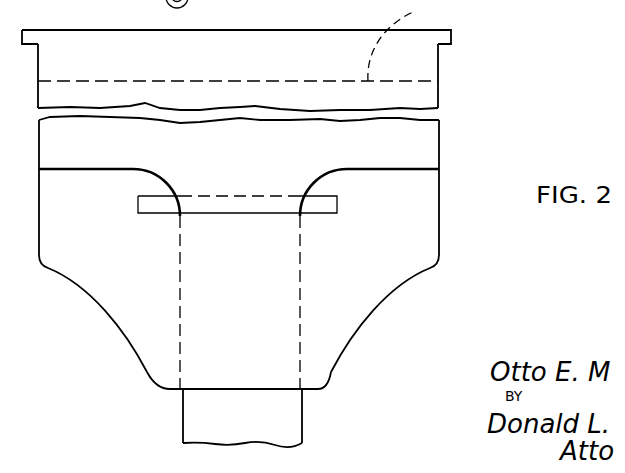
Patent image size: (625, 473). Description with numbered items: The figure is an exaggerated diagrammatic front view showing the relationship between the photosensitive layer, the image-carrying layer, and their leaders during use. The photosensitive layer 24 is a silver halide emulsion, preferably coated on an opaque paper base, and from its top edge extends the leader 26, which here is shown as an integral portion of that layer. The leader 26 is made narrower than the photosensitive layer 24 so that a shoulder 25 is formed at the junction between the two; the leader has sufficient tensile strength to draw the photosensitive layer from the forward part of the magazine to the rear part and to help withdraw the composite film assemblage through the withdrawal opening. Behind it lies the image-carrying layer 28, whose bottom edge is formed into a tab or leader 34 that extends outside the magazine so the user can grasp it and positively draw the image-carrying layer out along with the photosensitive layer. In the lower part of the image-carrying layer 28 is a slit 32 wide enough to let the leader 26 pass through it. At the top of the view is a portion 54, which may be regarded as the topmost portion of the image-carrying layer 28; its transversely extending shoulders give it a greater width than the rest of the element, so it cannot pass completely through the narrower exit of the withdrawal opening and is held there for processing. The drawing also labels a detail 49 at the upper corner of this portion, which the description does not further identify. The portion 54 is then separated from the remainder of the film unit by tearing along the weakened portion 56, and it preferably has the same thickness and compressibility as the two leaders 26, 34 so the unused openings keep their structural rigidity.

The photosensitive layer 24 is at (410, 152).
The shoulder 25 is at (393, 171).
The leader 26 is at (295, 420).
The image-carrying layer 28 is at (430, 250).
The slit 32 is at (332, 207).
The leader 34 is at (330, 370).
The cap flange 49 is at (451, 35).
The portion 54 is at (440, 50).
The weakened portion 56 is at (404, 41).